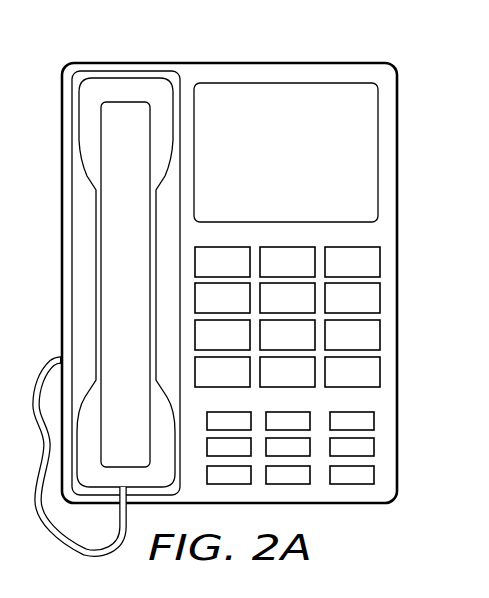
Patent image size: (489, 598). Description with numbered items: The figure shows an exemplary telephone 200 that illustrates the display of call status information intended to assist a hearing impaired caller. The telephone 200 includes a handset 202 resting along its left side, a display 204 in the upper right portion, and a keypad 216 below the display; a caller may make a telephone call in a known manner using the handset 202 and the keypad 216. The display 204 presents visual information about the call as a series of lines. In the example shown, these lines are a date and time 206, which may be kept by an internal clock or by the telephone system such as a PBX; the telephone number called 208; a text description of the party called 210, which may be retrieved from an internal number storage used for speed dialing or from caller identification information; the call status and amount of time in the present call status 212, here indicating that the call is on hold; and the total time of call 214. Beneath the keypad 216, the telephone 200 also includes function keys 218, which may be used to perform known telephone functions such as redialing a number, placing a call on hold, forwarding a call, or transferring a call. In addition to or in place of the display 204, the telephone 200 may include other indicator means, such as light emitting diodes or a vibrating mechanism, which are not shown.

The telephone 200 is at (240, 63).
The handset 202 is at (122, 85).
The display 204 is at (287, 82).
The date and time 206 is at (365, 103).
The telephone number called 208 is at (360, 129).
The text description of the party called 210 is at (360, 158).
The call status and amount of time in present call status 212 is at (377, 182).
The total time of call 214 is at (377, 212).
The keypad 216 is at (403, 247).
The function keys 218 is at (403, 412).